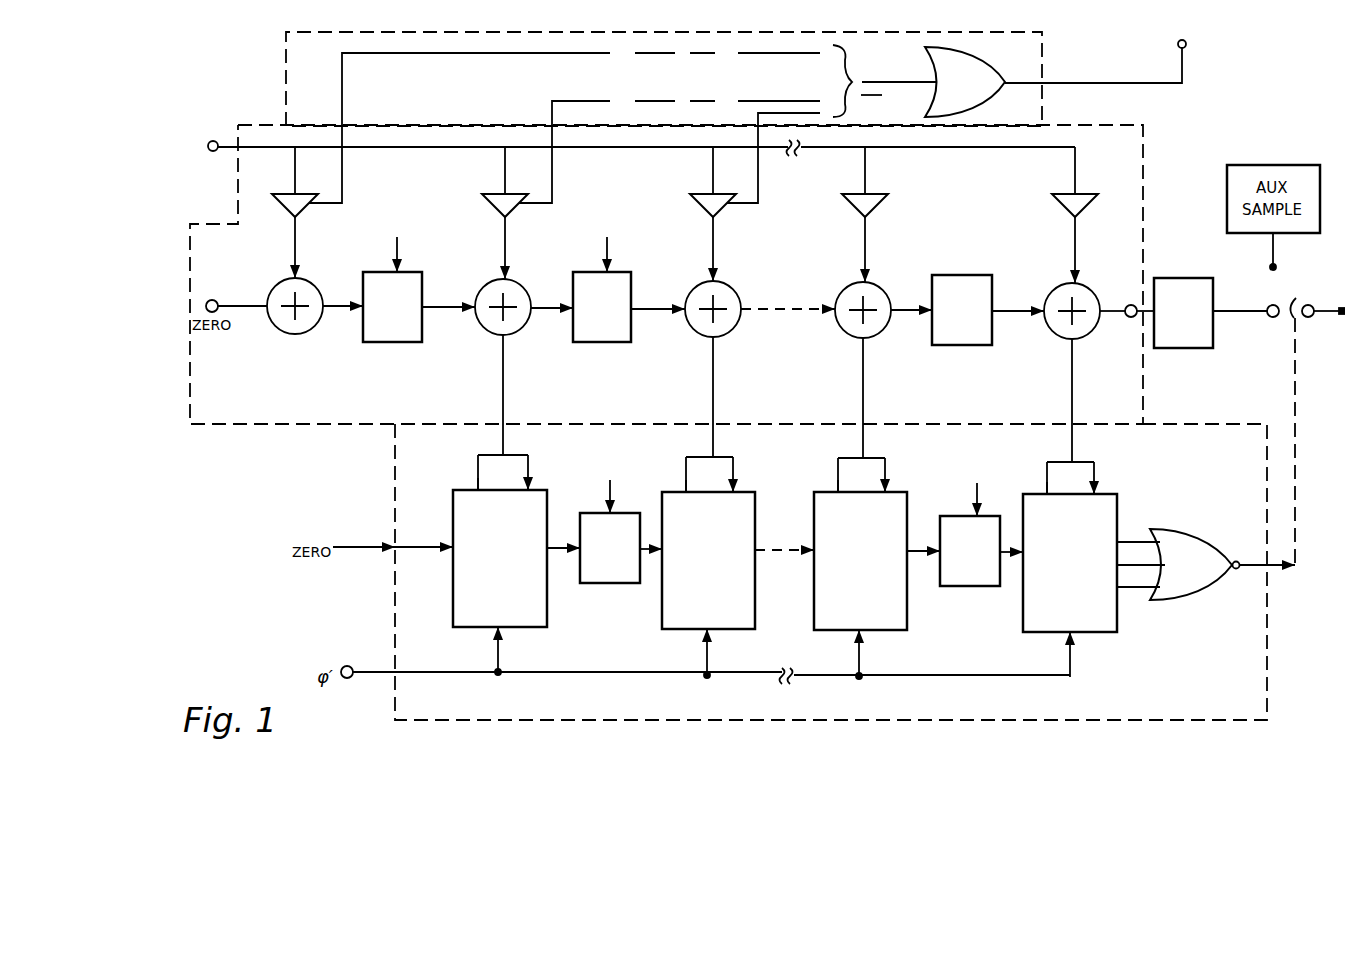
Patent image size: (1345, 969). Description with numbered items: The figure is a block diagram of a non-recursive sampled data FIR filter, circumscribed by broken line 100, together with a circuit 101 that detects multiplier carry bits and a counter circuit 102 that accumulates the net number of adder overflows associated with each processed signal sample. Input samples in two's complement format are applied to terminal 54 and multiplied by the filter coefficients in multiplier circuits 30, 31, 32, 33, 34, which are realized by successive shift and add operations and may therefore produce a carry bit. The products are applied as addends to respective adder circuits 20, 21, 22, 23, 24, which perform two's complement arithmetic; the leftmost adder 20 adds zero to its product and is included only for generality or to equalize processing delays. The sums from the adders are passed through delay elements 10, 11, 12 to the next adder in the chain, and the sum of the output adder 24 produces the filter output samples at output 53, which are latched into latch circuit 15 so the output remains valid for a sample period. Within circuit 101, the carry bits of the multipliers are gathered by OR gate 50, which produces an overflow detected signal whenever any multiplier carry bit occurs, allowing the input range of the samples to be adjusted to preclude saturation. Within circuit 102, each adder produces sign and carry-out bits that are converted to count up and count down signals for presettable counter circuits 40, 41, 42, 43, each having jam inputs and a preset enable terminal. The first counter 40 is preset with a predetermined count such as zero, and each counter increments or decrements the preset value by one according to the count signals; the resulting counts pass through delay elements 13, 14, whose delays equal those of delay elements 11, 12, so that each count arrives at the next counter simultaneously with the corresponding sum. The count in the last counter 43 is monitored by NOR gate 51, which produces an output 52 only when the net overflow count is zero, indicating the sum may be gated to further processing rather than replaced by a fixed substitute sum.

The delay element 10 is at (407, 344).
The delay element 11 is at (590, 344).
The delay element 12 is at (977, 347).
The delay element 13 is at (596, 584).
The delay element 14 is at (952, 587).
The latch circuit 15 is at (1190, 349).
The adder circuit 20 is at (290, 333).
The adder circuit 21 is at (497, 335).
The adder circuit 22 is at (720, 337).
The adder circuit 23 is at (870, 337).
The adder circuit 24 is at (1078, 340).
The multiplier circuit 30 is at (288, 203).
The multiplier circuit 31 is at (492, 203).
The multiplier circuit 32 is at (698, 200).
The multiplier circuit 33 is at (852, 200).
The multiplier circuit 34 is at (1057, 205).
The counter circuit 40 is at (518, 628).
The counter circuit 41 is at (722, 630).
The counter circuit 42 is at (875, 631).
The counter circuit 43 is at (1085, 633).
The OR gate 50 is at (933, 70).
The NOR gate 51 is at (1200, 535).
The overflow output 52 is at (1245, 570).
The filter output 53 is at (1126, 305).
The input terminal 54 is at (208, 148).
The non-recursive sampled data FIR filter 100 is at (213, 224).
The carry bit detection circuit 101 is at (286, 72).
The counter circuit 102 is at (395, 486).